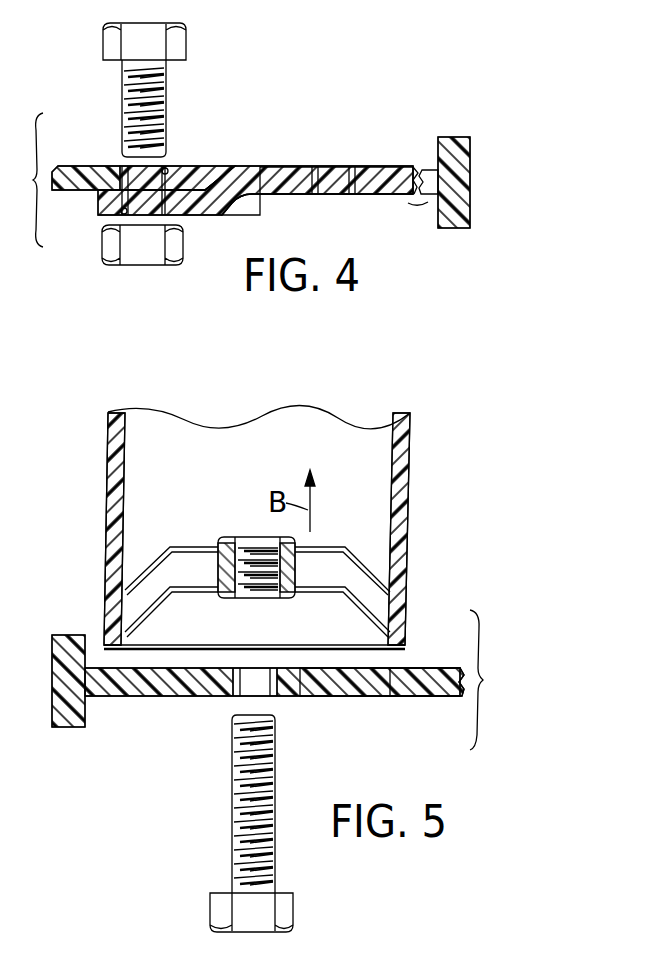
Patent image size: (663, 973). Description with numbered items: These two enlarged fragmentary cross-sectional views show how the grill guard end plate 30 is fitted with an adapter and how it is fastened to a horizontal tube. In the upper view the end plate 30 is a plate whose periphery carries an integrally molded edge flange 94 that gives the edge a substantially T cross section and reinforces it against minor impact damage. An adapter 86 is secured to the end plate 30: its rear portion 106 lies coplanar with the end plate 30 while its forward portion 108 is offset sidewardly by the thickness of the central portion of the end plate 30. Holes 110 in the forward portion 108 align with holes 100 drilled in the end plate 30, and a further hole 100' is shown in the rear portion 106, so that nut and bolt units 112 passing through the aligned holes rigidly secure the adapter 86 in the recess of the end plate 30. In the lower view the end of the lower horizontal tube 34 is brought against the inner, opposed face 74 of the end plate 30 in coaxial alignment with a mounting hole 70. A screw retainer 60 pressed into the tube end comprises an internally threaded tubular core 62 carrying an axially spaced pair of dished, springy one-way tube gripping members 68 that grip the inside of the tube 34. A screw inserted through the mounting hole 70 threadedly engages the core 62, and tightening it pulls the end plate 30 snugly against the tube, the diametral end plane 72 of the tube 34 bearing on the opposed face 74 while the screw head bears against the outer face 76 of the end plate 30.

In FIG. 4, the end plate 30 is at (100, 165).
In FIG. 5, the end plate 30 is at (320, 698).
In FIG. 4, the nut and bolt unit 112 is at (167, 95).
In FIG. 4, the hole 100 is at (198, 172).
In FIG. 4, the aperture in bracket arm 100' is at (330, 151).
In FIG. 4, the rear portion 106 is at (266, 166).
In FIG. 4, the forward portion 108 is at (187, 216).
In FIG. 4, the adapter 86 is at (260, 196).
In FIG. 4, the edge flange 94 is at (448, 140).
In FIG. 5, the edge flange 94 is at (68, 727).
In FIG. 4, the hole 110 is at (120, 216).
In FIG. 5, the lower horizontal tube 34 is at (406, 495).
In FIG. 5, the screw retainer 60 is at (226, 537).
In FIG. 5, the internally threaded tubular core 62 is at (222, 566).
In FIG. 5, the tube gripping member 68 is at (347, 590).
In FIG. 5, the diametral end plane 72 is at (104, 650).
In FIG. 5, the opposed face 74 is at (410, 668).
In FIG. 5, the outer face 76 is at (355, 698).
In FIG. 5, the mounting hole 70 is at (237, 698).